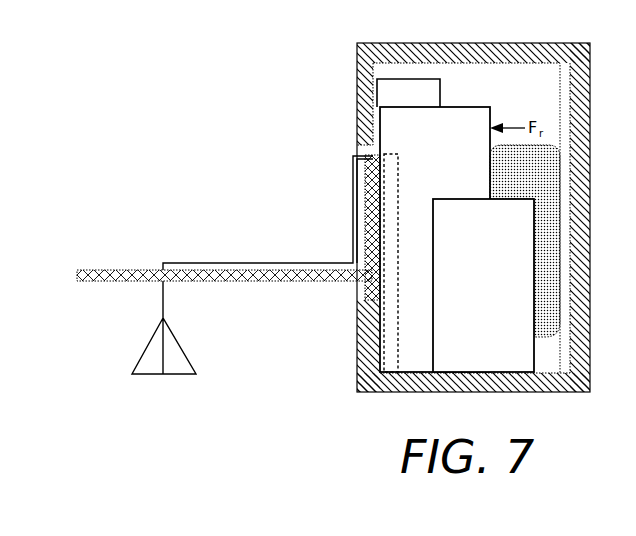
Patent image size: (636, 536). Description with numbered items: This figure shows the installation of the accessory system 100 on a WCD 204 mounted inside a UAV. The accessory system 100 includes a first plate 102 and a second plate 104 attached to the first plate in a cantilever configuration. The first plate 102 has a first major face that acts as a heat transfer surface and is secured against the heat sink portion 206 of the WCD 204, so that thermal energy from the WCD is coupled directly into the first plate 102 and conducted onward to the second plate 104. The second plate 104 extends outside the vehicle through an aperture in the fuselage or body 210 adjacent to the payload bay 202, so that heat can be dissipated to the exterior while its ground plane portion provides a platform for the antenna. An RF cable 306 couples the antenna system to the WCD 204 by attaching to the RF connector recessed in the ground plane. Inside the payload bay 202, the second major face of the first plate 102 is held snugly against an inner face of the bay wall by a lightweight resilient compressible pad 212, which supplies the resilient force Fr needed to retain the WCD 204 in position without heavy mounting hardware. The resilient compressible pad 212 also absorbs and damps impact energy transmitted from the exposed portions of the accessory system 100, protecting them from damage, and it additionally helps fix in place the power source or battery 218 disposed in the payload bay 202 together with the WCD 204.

The accessory system 100 is at (143, 423).
The first plate 102 is at (378, 292).
The second plate 104 is at (132, 265).
The payload bay 202 is at (437, 60).
The WCD 204 is at (435, 239).
The heat sink portion 206 is at (393, 317).
The fuselage or body 210 is at (588, 222).
The resilient compressible pad 212 is at (525, 241).
The power source or battery 218 is at (483, 285).
The RF cable 306 is at (270, 260).